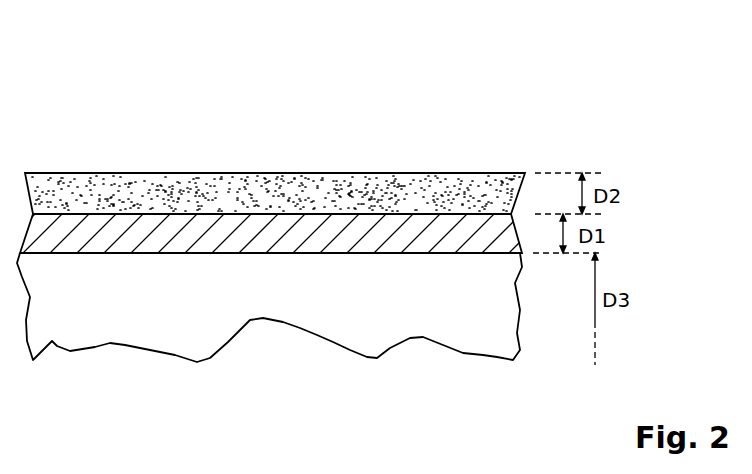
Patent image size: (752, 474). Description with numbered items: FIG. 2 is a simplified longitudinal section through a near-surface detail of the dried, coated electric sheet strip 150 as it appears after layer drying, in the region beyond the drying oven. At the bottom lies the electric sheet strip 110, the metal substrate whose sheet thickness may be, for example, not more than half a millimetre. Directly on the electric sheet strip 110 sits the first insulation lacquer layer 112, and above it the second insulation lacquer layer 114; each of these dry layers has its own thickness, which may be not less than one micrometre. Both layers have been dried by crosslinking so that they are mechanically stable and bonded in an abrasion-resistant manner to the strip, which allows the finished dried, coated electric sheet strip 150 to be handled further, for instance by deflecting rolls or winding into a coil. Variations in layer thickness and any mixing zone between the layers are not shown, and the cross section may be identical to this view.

The dried, coated electric sheet strip 150 is at (431, 79).
The second insulation lacquer layer 114 is at (148, 175).
The first insulation lacquer layer 112 is at (78, 242).
The electric sheet strip 110 is at (373, 337).